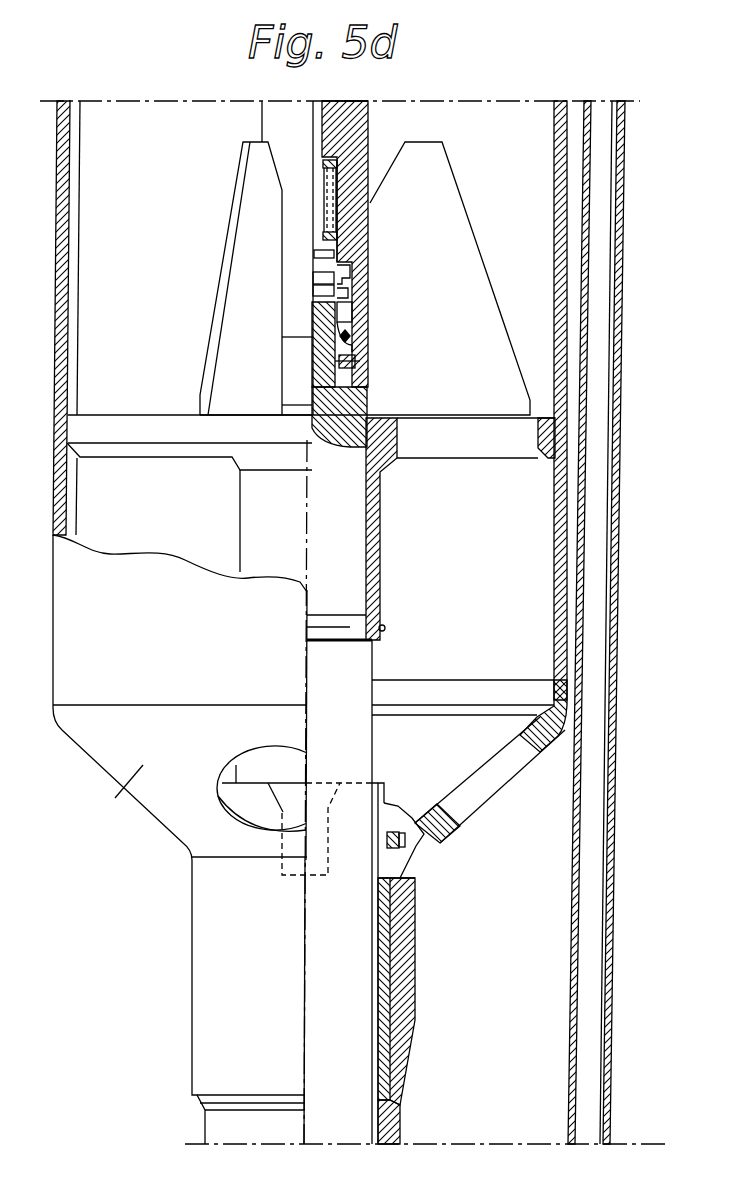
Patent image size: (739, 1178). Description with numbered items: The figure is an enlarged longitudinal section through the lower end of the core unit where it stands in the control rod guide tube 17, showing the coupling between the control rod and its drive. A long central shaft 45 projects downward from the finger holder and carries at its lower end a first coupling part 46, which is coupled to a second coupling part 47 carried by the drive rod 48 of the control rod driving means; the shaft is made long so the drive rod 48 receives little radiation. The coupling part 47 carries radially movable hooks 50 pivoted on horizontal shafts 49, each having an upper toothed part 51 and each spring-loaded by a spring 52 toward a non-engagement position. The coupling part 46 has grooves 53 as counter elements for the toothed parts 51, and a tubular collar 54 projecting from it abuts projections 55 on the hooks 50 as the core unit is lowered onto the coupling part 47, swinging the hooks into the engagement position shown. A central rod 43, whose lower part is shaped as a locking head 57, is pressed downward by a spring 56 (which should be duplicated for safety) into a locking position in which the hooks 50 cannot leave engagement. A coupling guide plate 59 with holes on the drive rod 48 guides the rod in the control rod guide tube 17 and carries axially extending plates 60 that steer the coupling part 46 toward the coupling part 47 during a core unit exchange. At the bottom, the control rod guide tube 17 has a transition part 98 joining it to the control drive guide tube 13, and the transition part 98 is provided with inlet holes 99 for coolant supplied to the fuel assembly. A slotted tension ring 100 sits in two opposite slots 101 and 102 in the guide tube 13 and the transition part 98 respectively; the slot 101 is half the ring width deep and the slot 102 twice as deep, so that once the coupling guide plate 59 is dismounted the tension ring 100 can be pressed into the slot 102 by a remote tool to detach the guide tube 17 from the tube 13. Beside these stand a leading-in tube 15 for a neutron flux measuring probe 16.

The leading-in tube 13 is at (398, 1140).
The leading-in tube 15 is at (568, 1110).
The neutron flux measuring probe 16 is at (588, 1064).
The control rod guide tube 17 is at (565, 178).
The central rod 43 is at (325, 120).
The central shaft 45 is at (357, 148).
The first coupling part 46 is at (355, 224).
The second coupling part 47 is at (334, 413).
The drive rod 48 is at (342, 575).
The horizontal shaft 49 is at (342, 334).
The hook 50 is at (340, 312).
The toothed part 51 is at (340, 291).
The spring 52 is at (348, 369).
The groove 53 is at (344, 282).
The tubular collar 54 is at (360, 323).
The projection 55 is at (350, 338).
The spring 56 is at (328, 188).
The locking head 57 is at (326, 258).
The coupling guide plate 59 is at (450, 452).
The axially extending plate 60 is at (472, 272).
The transition part 98 is at (425, 833).
The inlet hole 99 is at (503, 768).
The pin 100 is at (387, 838).
The slot 101 is at (388, 808).
The slot 102 is at (410, 855).